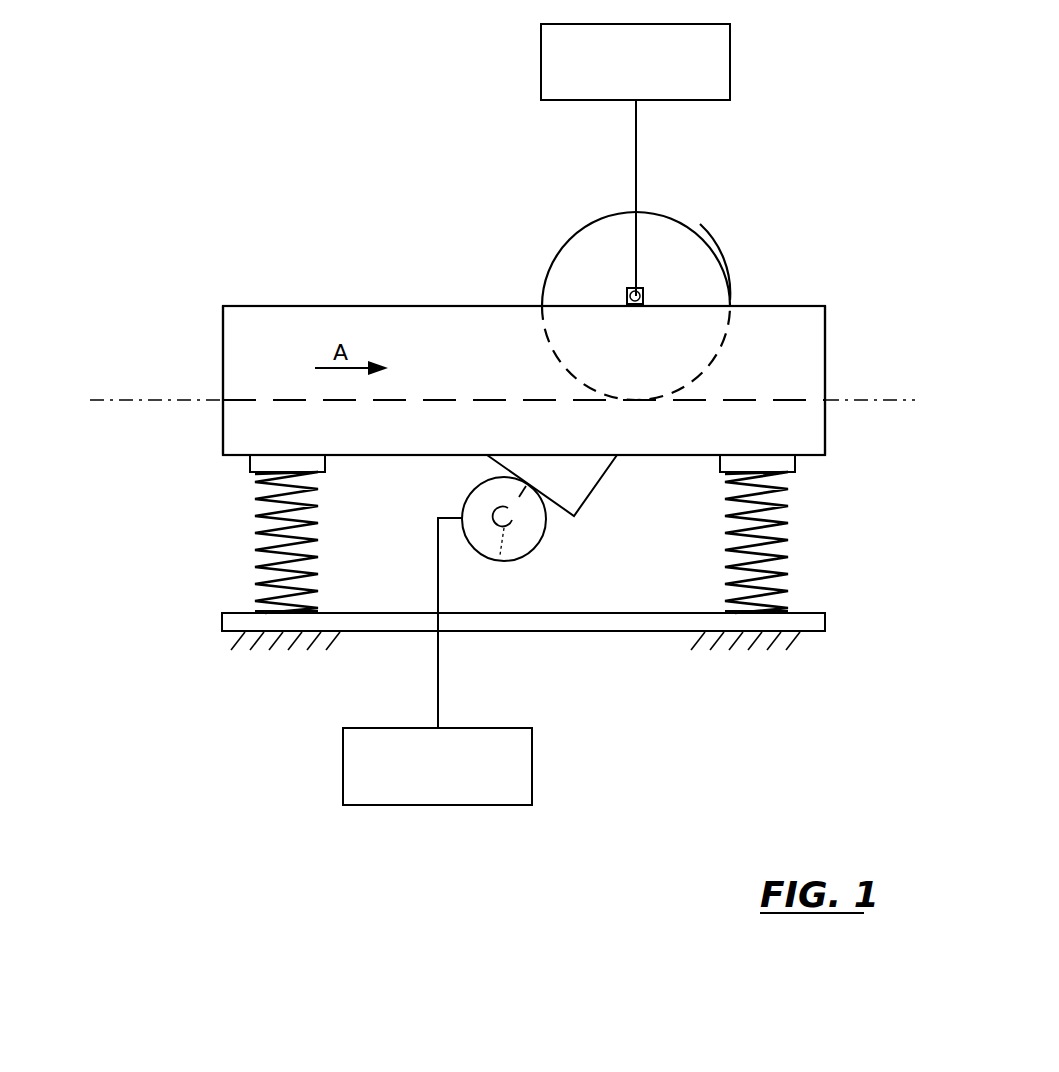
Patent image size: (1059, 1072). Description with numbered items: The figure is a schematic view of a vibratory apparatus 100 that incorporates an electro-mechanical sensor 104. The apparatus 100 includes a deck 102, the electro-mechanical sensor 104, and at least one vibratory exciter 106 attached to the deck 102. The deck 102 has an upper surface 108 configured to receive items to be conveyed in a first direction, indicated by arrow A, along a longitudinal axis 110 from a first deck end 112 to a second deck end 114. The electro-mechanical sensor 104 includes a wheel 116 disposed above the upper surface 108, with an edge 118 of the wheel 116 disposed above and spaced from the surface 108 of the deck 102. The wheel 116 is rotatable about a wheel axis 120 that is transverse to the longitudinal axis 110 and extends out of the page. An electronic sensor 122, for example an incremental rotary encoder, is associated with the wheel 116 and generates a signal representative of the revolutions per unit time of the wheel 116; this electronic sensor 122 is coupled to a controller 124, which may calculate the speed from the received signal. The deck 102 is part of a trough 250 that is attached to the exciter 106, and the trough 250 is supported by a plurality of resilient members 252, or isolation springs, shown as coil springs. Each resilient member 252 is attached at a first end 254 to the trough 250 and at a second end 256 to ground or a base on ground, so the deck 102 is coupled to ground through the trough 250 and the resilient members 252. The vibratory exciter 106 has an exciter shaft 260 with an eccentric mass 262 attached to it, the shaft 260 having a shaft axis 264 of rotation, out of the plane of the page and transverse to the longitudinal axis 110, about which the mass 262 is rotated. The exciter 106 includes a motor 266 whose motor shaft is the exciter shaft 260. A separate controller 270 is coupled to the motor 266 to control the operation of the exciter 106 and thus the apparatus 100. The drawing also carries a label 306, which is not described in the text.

The vibratory apparatus 100 is at (790, 200).
The deck 102 is at (800, 400).
The electro-mechanical sensor 104 is at (583, 182).
The vibratory exciter 106 is at (592, 562).
The upper surface 108 is at (472, 398).
The longitudinal axis 110 is at (190, 398).
The first deck end 112 is at (222, 325).
The second deck end 114 is at (826, 325).
The wheel 116 is at (597, 248).
The edge of the wheel 118 is at (731, 278).
The wheel axis 120 is at (625, 297).
The electronic sensor 122 is at (640, 292).
The controller 124 is at (722, 40).
The trough 250 is at (308, 318).
The resilient members 252 is at (250, 520).
The first end 254 is at (248, 470).
The second end 256 is at (260, 612).
The exciter shaft 260 is at (518, 522).
The eccentric mass 262 is at (520, 548).
The shaft axis 264 is at (500, 538).
The motor 266 is at (490, 495).
The controller 270 is at (527, 750).
The cam follower 306 is at (335, 458).